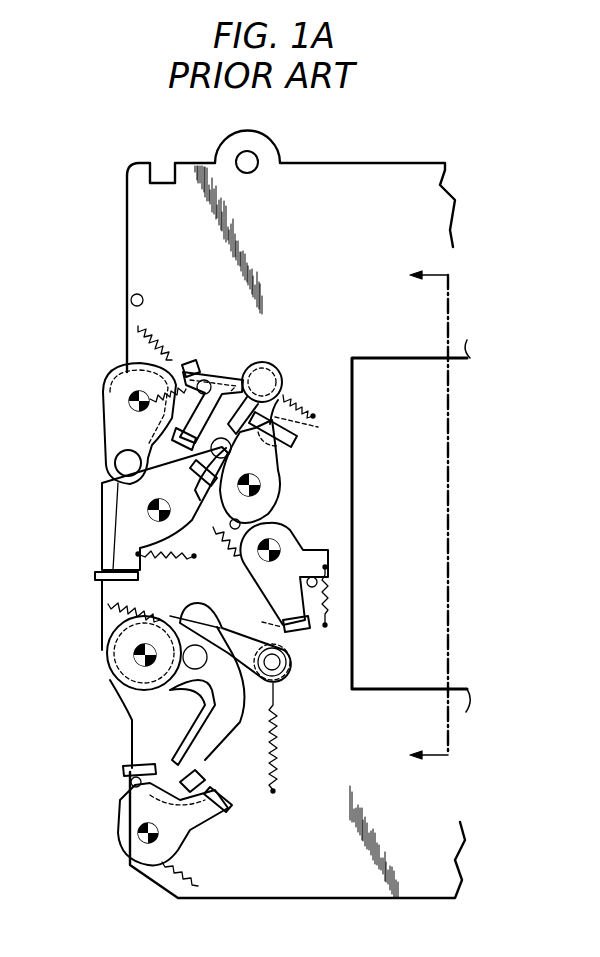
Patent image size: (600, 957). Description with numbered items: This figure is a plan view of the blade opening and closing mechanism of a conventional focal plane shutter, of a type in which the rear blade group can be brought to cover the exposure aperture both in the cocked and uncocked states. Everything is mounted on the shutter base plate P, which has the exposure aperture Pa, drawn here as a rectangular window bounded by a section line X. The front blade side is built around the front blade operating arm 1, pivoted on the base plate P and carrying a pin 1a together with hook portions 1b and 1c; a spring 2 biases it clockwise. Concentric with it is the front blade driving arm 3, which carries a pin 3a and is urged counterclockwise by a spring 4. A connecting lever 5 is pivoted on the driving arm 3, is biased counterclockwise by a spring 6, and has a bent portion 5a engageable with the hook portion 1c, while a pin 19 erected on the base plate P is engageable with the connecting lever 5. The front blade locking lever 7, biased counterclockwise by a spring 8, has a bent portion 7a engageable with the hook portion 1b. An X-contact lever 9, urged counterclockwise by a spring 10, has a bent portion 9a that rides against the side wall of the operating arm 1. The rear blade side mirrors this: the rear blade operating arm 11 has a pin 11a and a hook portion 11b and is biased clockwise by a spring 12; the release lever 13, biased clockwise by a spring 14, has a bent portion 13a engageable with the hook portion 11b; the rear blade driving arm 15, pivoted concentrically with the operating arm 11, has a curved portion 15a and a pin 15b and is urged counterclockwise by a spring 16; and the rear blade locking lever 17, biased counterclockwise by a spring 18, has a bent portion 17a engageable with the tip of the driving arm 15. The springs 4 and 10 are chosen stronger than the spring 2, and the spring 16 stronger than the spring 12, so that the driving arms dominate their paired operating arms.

The shutter base plate P is at (127, 271).
The exposure aperture Pa is at (386, 362).
The section line X is at (421, 516).
The front blade operating arm 1 is at (263, 362).
The pin 1a is at (280, 372).
The hook portion 1b is at (311, 429).
The hook portion 1c is at (228, 449).
The spring 2 is at (300, 402).
The front blade driving arm 3 is at (105, 404).
The pin 3a is at (115, 464).
The spring 4 is at (136, 330).
The connecting lever 5 is at (232, 376).
The bent portion 5a is at (185, 440).
The spring 6 is at (190, 362).
The front blade locking lever 7 is at (280, 484).
The bent portion 7a is at (294, 446).
The spring 8 is at (228, 550).
The X-contact lever 9 is at (118, 520).
The bent portion 9a is at (206, 486).
The spring 10 is at (130, 583).
The rear blade operating arm 11 is at (288, 657).
The pin 11a is at (288, 674).
The hook portion 11b is at (259, 621).
The spring 12 is at (278, 748).
The release lever 13 is at (292, 532).
The bent portion 13a is at (310, 628).
The spring 14 is at (333, 600).
The rear blade driving arm 15 is at (185, 752).
The curved portion 15a is at (195, 778).
The pin 15b is at (195, 670).
The spring 16 is at (108, 605).
The rear blade locking lever 17 is at (122, 825).
The bent portion 17a is at (228, 812).
The spring 18 is at (198, 880).
The pin 19 is at (130, 300).